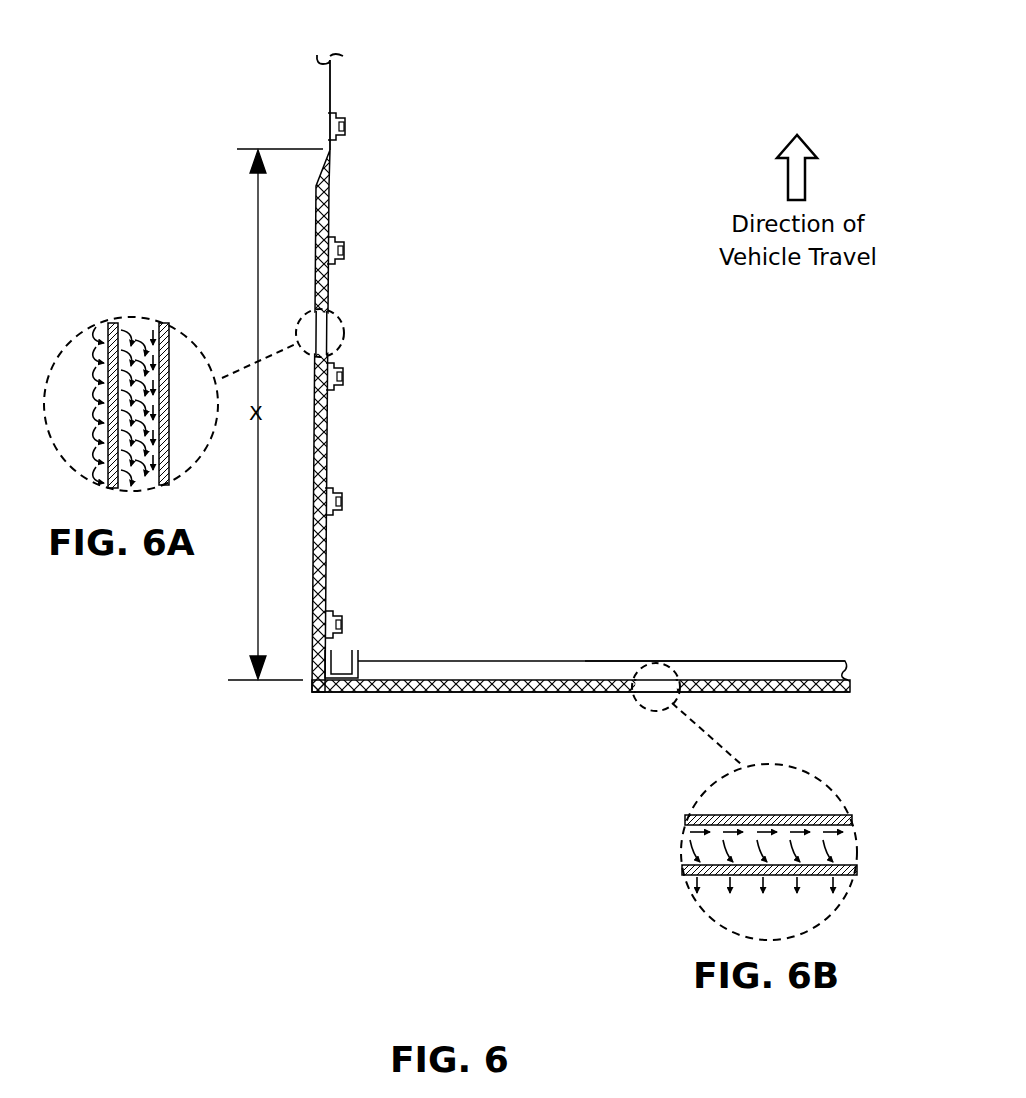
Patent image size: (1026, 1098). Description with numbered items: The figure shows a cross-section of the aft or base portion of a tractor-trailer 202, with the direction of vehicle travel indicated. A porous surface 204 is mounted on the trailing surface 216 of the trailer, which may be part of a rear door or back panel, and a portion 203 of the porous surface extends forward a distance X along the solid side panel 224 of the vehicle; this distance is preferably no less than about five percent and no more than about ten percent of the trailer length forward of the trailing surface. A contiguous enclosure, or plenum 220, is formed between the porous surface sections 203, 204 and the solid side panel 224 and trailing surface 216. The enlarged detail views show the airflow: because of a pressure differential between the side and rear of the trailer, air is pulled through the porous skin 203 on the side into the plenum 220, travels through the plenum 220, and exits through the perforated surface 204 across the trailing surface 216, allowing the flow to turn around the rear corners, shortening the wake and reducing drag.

In FIG. 6, the trailer 202 is at (365, 659).
In FIG. 6, the porous surface portion 203 is at (315, 183).
In FIG. 6A, the porous surface portion 203 is at (112, 322).
In FIG. 6, the porous surface 204 is at (392, 693).
In FIG. 6B, the porous surface 204 is at (682, 867).
In FIG. 6, the trailing surface 216 is at (585, 684).
In FIG. 6B, the trailing surface 216 is at (725, 815).
In FIG. 6, the plenum 220 is at (325, 180).
In FIG. 6A, the plenum 220 is at (143, 325).
In FIG. 6, the solid side panel 224 is at (330, 95).
In FIG. 6A, the solid side panel 224 is at (178, 350).